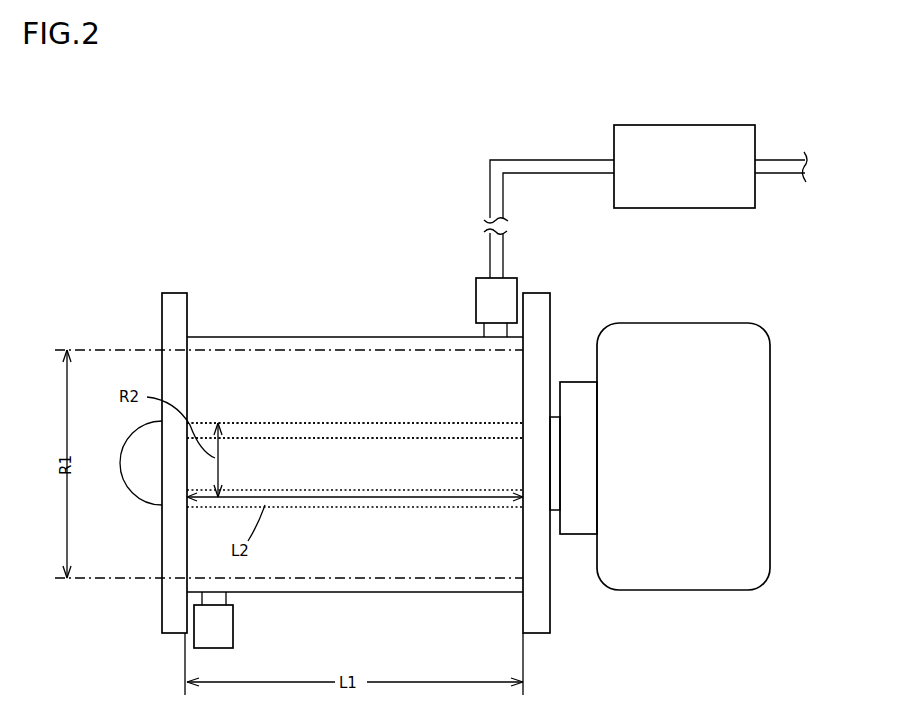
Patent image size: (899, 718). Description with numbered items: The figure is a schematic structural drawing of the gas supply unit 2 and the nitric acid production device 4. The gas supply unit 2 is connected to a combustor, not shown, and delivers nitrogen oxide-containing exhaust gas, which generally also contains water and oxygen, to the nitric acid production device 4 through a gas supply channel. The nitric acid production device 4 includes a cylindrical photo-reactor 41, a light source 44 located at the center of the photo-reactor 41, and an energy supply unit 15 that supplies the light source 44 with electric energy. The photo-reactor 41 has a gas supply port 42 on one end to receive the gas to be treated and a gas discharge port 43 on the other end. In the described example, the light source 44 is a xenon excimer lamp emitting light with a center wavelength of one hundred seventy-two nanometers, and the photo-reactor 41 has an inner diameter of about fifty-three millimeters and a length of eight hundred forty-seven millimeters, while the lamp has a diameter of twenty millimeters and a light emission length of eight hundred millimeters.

The gas supply unit 2 is at (757, 138).
The nitric acid production device 4 is at (319, 157).
The energy supply unit 15 is at (708, 340).
The photo-reactor 41 is at (261, 337).
The gas supply port 42 is at (475, 298).
The gas discharge port 43 is at (198, 650).
The light source 44 is at (358, 412).